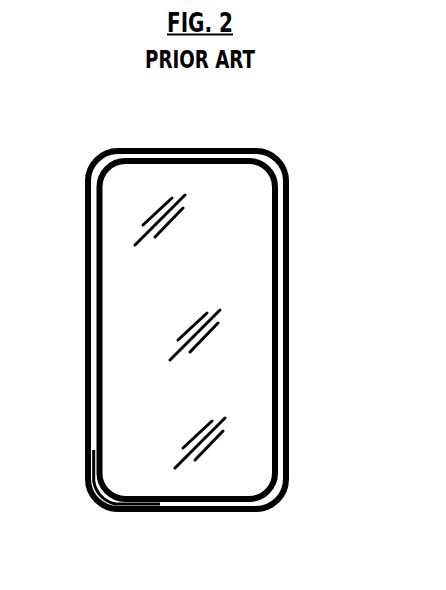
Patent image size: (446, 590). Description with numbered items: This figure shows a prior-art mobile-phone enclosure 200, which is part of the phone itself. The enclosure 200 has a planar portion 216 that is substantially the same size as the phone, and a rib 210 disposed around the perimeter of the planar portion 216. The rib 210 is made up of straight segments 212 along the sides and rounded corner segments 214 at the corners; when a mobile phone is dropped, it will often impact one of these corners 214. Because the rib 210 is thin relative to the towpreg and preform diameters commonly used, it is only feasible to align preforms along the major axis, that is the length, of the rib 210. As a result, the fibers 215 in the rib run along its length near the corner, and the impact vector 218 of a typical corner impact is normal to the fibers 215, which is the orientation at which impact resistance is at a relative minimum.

The prior-art mobile-phone enclosure 200 is at (251, 307).
The rib 210 is at (298, 357).
The straight segments 212 is at (188, 158).
The rounded corner segments 214 is at (277, 502).
The fibers 215 is at (136, 506).
The planar portion 216 is at (180, 294).
The impact vector 218 is at (93, 505).